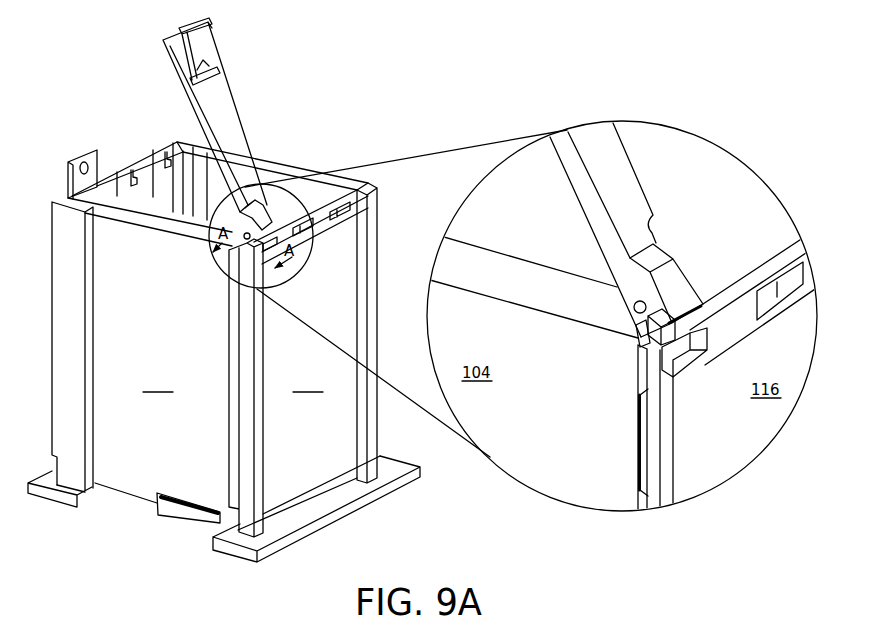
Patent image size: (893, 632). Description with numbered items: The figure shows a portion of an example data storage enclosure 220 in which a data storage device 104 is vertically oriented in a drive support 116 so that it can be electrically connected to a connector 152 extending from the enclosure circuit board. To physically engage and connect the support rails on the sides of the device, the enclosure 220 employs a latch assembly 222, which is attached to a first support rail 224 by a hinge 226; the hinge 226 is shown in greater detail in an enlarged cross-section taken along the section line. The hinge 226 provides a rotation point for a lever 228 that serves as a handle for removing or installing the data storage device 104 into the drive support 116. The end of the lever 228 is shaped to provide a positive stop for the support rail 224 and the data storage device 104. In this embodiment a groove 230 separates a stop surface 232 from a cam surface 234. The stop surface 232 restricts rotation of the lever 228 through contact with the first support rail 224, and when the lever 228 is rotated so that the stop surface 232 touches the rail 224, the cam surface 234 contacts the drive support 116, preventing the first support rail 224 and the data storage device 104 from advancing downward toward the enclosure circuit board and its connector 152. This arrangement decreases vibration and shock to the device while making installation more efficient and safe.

The data storage device 104 is at (224, 352).
The drive support 116 is at (52, 300).
The connector 152 is at (186, 523).
The data storage enclosure 220 is at (162, 128).
The latch assembly 222 is at (269, 161).
The first support rail 224 is at (637, 460).
The hinge 226 is at (704, 250).
The lever 228 is at (573, 178).
The groove 230 is at (646, 323).
The stop surface 232 is at (642, 341).
The cam surface 234 is at (704, 313).